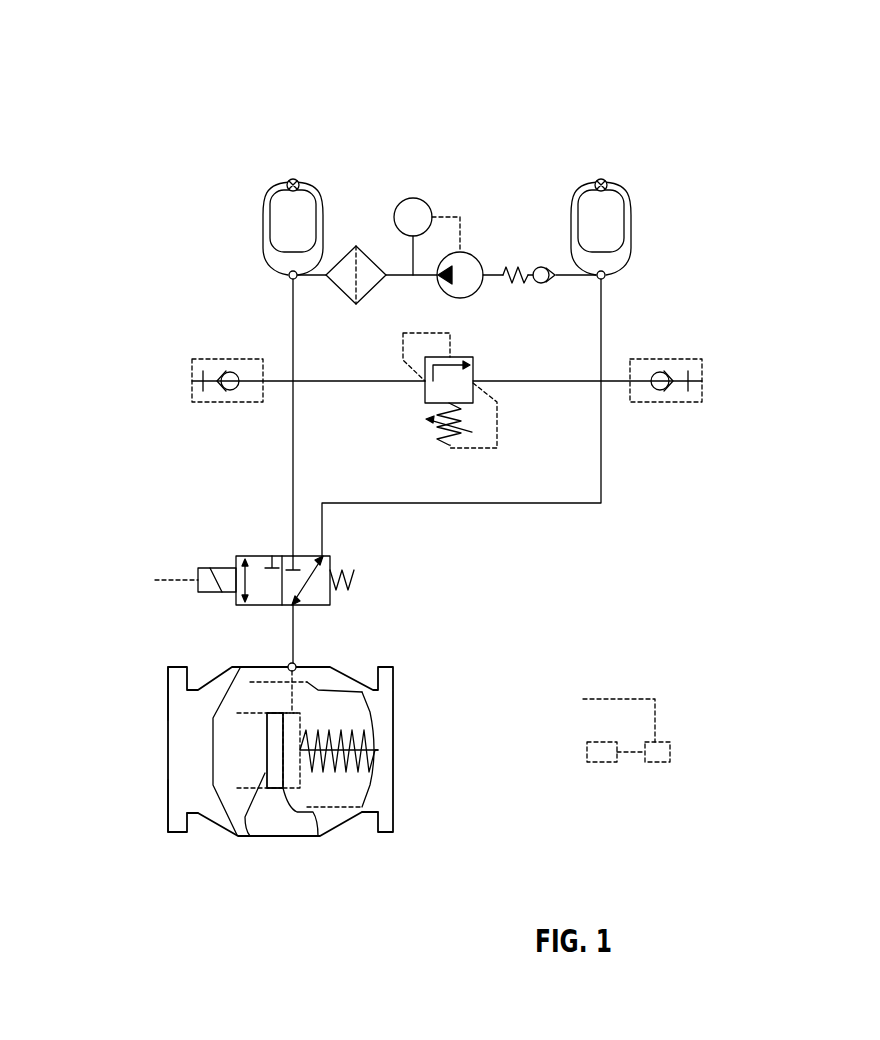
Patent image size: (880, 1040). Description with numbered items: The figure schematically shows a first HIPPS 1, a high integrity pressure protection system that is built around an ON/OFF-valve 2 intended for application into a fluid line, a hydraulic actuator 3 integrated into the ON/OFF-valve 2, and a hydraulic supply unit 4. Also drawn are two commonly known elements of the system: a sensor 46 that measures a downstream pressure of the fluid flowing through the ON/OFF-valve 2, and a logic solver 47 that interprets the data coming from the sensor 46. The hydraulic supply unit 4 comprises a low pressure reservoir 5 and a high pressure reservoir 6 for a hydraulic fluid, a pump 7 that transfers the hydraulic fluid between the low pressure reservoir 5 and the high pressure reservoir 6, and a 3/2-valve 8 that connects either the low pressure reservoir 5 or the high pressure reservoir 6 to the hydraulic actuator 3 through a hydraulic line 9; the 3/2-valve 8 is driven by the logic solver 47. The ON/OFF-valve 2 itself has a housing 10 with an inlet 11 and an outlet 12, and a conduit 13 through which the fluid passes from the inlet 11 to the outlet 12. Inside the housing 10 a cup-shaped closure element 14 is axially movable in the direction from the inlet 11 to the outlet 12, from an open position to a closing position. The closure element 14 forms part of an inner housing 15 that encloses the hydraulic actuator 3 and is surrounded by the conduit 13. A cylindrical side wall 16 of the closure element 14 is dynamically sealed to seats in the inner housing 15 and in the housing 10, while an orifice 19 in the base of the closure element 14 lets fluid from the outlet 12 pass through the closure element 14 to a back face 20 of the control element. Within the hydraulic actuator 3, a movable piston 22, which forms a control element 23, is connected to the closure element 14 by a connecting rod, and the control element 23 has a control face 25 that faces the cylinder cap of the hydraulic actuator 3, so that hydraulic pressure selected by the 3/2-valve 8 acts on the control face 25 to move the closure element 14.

The first HIPPS 1 is at (693, 128).
The ON/OFF-valve 2 is at (276, 855).
The hydraulic actuator 3 is at (250, 692).
The hydraulic supply unit 4 is at (505, 613).
The low pressure reservoir 5 is at (613, 263).
The high pressure reservoir 6 is at (280, 258).
The pump 7 is at (463, 267).
The 3/2-valve 8 is at (268, 572).
The hydraulic line 9 is at (293, 633).
The housing 10 is at (202, 815).
The inlet 11 is at (170, 698).
The outlet 12 is at (390, 752).
The conduit 13 is at (190, 797).
The cup-shaped closure element 14 is at (370, 713).
The inner housing 15 is at (213, 729).
The cylindrical side wall 16 is at (367, 833).
The orifice 19 is at (363, 788).
The back face 20 is at (253, 838).
The movable piston 22 is at (268, 766).
The control element 23 is at (275, 750).
The control face 25 is at (317, 833).
The sensor 46 is at (597, 763).
The logic solver 47 is at (655, 763).